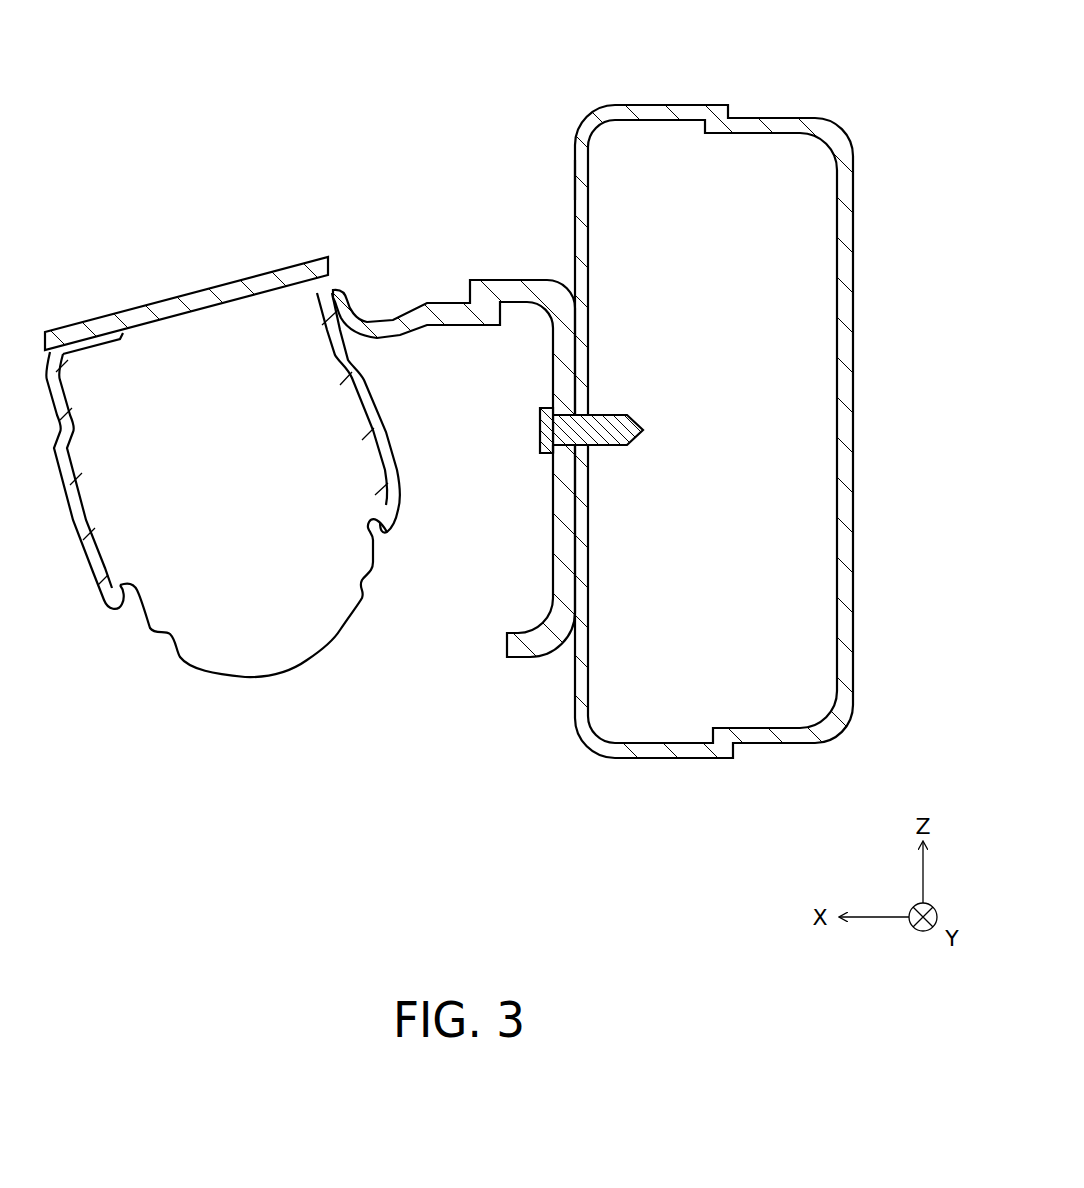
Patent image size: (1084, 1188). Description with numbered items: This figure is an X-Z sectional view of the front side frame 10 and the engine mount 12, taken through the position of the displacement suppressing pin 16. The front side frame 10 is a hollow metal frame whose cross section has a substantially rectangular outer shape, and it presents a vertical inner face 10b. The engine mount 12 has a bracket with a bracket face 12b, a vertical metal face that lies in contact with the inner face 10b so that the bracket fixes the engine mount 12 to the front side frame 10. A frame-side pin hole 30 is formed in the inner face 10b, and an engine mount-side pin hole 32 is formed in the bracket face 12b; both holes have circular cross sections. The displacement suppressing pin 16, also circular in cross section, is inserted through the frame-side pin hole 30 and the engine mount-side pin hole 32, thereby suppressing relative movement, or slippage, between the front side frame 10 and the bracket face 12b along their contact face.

The front side frame 10 is at (728, 90).
The inner face 10b is at (573, 183).
The engine mount 12 is at (203, 264).
The bracket face 12b is at (548, 577).
The frame-side pin hole 30 is at (600, 432).
The engine mount-side pin hole 32 is at (540, 412).
The displacement suppressing pin 16 is at (540, 440).